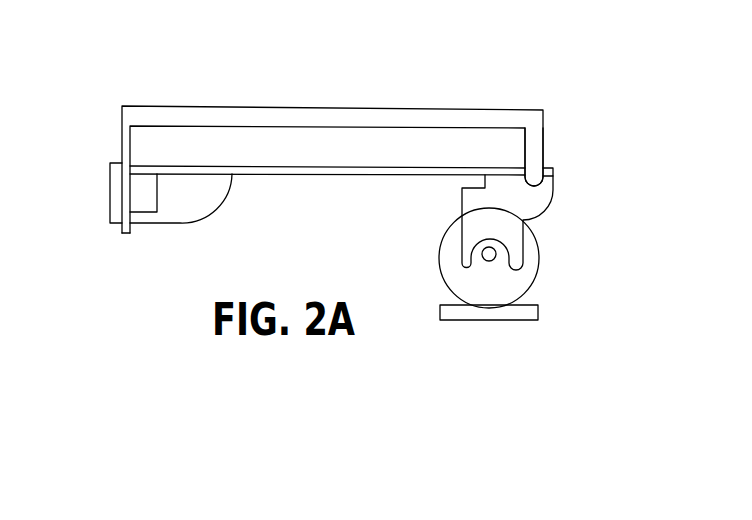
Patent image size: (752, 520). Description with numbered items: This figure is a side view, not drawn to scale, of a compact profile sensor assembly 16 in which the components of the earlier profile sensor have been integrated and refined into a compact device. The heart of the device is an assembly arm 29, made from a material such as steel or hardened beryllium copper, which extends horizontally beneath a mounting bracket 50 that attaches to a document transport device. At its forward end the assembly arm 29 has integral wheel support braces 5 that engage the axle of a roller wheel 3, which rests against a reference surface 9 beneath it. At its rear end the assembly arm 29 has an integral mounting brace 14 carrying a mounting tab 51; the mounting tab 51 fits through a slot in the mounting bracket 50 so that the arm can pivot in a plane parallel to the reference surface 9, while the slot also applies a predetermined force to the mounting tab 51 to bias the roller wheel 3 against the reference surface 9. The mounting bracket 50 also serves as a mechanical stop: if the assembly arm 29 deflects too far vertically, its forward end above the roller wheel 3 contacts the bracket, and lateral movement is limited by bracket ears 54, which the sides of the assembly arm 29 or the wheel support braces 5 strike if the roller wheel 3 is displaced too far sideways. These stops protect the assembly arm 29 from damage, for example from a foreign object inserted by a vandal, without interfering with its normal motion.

The compact profile sensor assembly 16 is at (124, 75).
The mounting bracket 50 is at (507, 120).
The bracket ears 54 is at (539, 147).
The assembly arm 29 is at (553, 172).
The wheel support braces 5 is at (540, 200).
The roller wheel 3 is at (530, 258).
The reference surface 9 is at (540, 312).
The mounting tab 51 is at (117, 190).
The mounting brace 14 is at (197, 200).